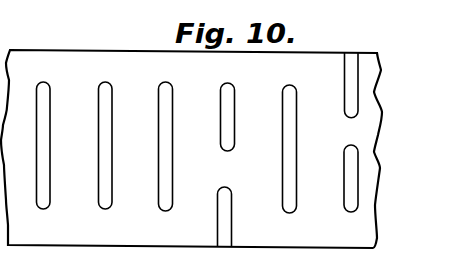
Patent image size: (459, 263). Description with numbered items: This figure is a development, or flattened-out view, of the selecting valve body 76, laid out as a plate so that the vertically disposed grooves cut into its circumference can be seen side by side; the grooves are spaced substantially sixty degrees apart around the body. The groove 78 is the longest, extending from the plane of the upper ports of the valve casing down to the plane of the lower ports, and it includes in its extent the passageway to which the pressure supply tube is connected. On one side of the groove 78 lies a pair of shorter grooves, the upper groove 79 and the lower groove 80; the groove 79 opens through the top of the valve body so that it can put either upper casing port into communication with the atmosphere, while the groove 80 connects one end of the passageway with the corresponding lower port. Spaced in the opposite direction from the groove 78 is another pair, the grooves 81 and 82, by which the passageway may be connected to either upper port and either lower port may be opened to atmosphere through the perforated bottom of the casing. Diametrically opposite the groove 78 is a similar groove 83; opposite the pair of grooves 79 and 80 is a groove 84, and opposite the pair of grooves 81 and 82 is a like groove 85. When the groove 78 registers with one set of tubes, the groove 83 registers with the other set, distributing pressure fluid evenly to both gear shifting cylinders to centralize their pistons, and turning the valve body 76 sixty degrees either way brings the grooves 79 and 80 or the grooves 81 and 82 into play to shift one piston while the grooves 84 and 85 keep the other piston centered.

The valve body 76 is at (112, 51).
The groove 78 is at (295, 93).
The groove 79 is at (353, 75).
The groove 80 is at (352, 174).
The groove 81 is at (232, 88).
The groove 82 is at (225, 205).
The groove 83 is at (108, 87).
The groove 84 is at (170, 91).
The groove 85 is at (47, 85).